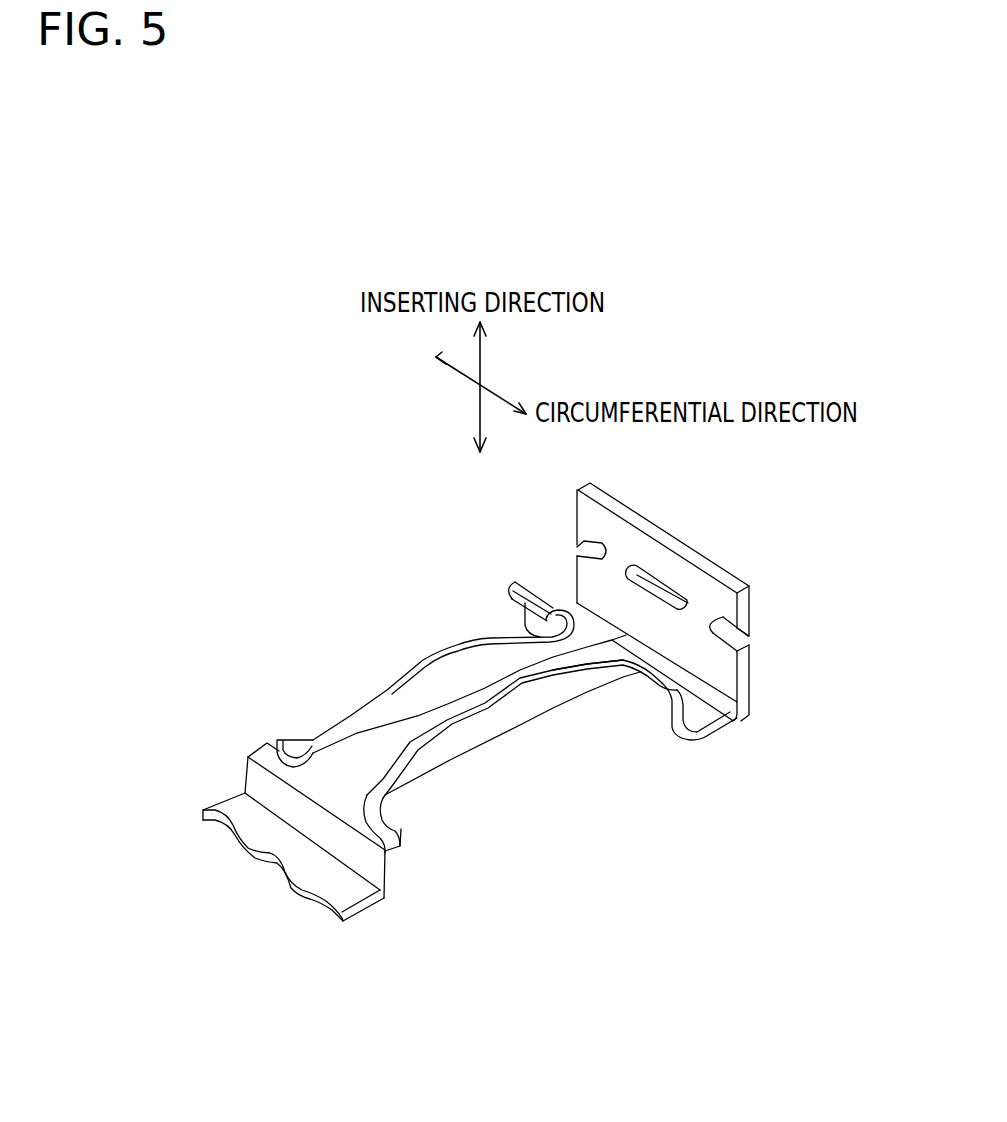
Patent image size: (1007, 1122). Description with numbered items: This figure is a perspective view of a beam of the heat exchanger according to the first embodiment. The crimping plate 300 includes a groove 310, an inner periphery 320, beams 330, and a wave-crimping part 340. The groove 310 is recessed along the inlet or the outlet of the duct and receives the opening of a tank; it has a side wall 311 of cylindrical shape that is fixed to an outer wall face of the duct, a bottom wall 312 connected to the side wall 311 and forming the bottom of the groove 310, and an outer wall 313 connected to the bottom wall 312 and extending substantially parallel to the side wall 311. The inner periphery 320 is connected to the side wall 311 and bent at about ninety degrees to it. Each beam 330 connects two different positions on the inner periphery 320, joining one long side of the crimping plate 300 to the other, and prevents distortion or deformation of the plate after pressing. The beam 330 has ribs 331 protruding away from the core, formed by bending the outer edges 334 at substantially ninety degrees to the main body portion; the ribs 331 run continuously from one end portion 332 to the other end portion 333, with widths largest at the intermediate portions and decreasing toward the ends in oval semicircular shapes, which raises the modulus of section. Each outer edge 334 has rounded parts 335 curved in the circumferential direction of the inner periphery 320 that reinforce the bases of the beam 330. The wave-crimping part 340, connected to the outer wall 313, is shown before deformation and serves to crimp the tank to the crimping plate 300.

The crimping plate 300 is at (733, 568).
The groove 310 is at (752, 706).
The side wall 311 is at (257, 782).
The bottom wall 312 is at (243, 808).
The outer wall 313 is at (727, 670).
The inner periphery 320 is at (513, 583).
The beam 330 is at (373, 760).
The rib 331 is at (412, 660).
The one end portion 332 is at (588, 645).
The other end portion 333 is at (337, 780).
The outer edge 334 is at (510, 667).
The rounded part 335 is at (543, 608).
The wave-crimping part 340 is at (657, 560).